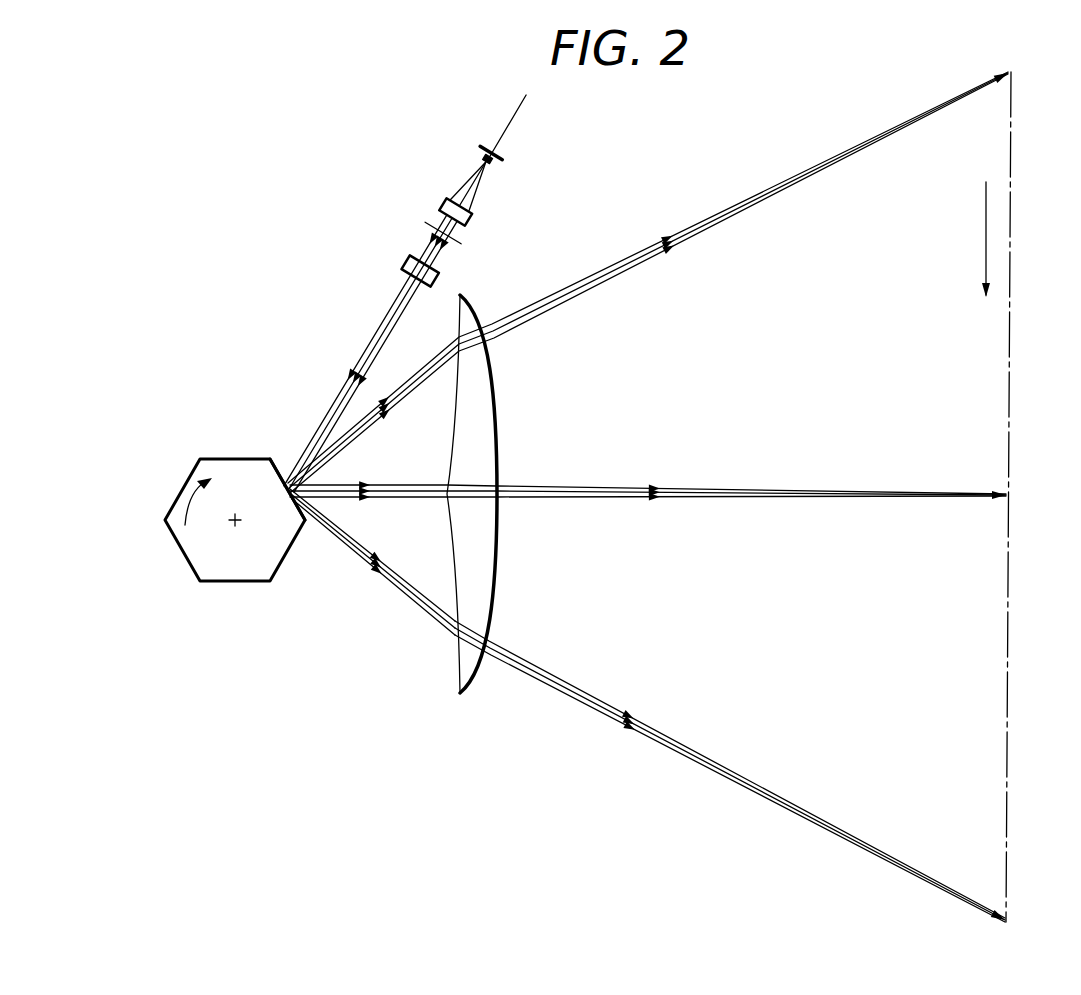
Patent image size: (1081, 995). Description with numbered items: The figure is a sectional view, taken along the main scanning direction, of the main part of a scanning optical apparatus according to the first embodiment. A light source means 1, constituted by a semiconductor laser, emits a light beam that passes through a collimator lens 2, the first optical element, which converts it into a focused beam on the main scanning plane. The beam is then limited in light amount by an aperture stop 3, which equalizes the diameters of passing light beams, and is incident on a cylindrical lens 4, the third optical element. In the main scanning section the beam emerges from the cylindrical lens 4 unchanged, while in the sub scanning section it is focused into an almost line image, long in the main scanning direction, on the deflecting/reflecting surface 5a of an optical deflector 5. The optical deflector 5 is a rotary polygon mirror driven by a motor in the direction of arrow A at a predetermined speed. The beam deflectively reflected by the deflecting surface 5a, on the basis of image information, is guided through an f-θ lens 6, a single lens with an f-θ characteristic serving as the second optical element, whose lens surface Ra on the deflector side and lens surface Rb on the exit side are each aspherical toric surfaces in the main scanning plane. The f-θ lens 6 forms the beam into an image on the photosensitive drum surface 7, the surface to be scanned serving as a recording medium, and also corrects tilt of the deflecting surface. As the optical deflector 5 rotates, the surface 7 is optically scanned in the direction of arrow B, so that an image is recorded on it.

The light source means 1 is at (485, 152).
The collimator lens 2 is at (447, 205).
The aperture stop 3 is at (426, 224).
The cylindrical lens 4 is at (403, 265).
The optical deflector 5 is at (237, 578).
The deflecting/reflecting surface 5a is at (283, 463).
The f-θ lens 6 is at (499, 396).
The surface to be scanned 7 is at (1013, 137).
The arrow A is at (186, 494).
The arrow B is at (984, 246).
The lens surface Ra is at (451, 613).
The lens surface Rb is at (488, 630).